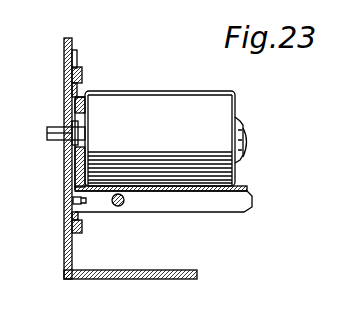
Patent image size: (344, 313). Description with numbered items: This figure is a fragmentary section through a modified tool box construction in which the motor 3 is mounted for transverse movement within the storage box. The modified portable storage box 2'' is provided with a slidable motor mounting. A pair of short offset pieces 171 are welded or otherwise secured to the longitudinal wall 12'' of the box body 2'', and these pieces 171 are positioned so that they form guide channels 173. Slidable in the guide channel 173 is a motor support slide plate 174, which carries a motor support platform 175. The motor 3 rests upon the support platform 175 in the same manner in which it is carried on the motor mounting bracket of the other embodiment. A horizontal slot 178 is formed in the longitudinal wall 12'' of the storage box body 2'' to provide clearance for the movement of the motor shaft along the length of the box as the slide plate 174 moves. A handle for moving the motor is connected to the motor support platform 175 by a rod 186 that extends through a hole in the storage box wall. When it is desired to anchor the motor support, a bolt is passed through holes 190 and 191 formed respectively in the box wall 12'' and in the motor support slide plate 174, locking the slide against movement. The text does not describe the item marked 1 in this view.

The motor 3 is at (199, 91).
The offset pieces 171 is at (73, 52).
The guide channels 173 is at (78, 70).
The motor support slide plate 174 is at (80, 90).
The motor support platform 175 is at (249, 189).
The horizontal slot 178 is at (66, 124).
The rod 186 is at (125, 204).
The hole 190 is at (68, 97).
The hole 191 is at (82, 99).
The longitudinal wall 12'' is at (55, 205).
The portable storage box 2'' is at (91, 303).
The housing 1 is at (112, 283).